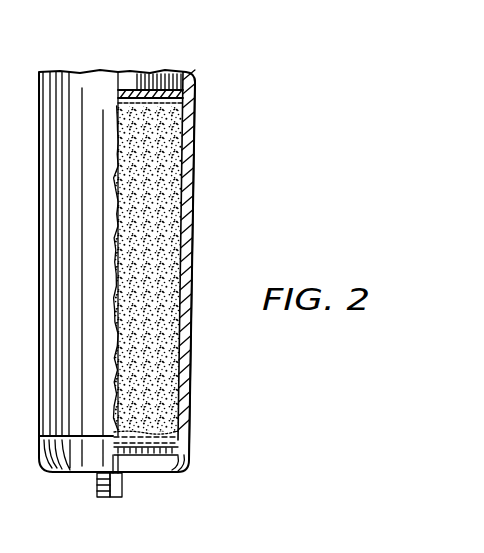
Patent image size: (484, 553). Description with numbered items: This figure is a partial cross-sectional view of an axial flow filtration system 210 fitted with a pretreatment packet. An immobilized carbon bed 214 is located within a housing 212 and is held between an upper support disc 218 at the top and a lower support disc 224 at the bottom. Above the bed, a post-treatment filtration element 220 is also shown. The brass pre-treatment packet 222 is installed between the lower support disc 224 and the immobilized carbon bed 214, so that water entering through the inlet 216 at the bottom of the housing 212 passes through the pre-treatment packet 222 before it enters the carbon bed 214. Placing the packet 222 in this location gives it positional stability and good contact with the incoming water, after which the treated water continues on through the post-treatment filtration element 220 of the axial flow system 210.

The axial flow system 210 is at (212, 88).
The housing 212 is at (190, 183).
The immobilized bed 214 is at (163, 152).
The inlet 216 is at (115, 497).
The upper support disc 218 is at (177, 72).
The post-treatment filtration element 220 is at (167, 71).
The pre-treatment packet 222 is at (166, 430).
The lower support disc 224 is at (180, 437).